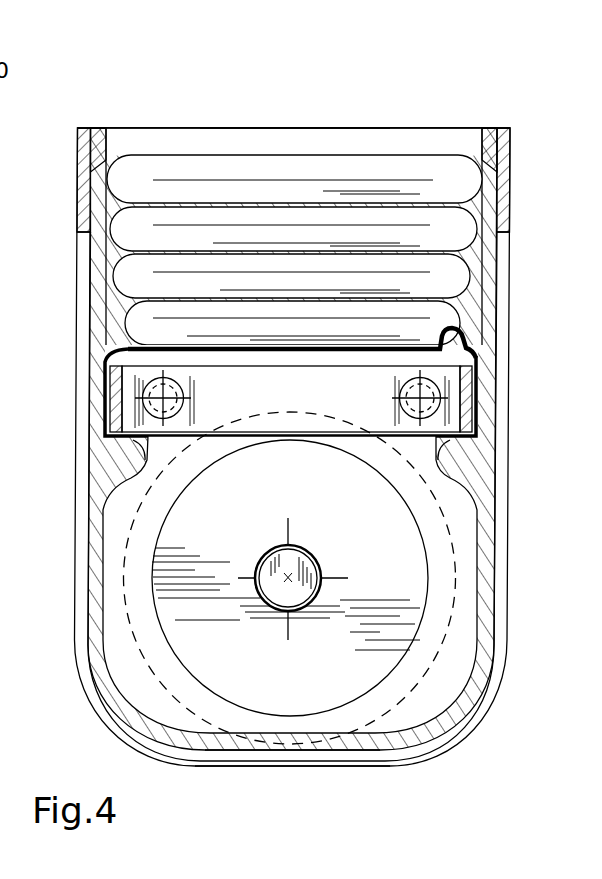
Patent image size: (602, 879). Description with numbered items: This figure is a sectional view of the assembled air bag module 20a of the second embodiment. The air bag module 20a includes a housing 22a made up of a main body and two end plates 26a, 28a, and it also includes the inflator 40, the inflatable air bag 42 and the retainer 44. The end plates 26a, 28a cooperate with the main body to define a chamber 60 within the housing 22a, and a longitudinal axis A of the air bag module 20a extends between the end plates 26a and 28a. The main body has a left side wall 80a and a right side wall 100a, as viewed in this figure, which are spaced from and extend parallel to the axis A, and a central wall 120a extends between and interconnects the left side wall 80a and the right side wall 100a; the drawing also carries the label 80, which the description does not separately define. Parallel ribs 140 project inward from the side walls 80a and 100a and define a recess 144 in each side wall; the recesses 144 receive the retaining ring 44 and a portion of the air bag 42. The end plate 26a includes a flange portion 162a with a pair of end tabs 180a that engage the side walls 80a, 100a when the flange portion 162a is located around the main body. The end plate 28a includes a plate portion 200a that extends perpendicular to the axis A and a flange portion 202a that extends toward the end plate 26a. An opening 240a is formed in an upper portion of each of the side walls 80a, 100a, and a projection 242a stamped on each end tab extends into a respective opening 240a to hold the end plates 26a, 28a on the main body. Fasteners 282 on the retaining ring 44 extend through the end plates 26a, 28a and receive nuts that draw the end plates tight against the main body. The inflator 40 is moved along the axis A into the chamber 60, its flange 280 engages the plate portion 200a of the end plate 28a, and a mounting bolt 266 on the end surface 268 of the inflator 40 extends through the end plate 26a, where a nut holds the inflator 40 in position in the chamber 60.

The air bag module 20a is at (478, 53).
The housing 22a is at (497, 130).
The end plate 26a is at (511, 210).
The end plate 28a is at (458, 722).
The inflator 40 is at (152, 537).
The inflatable air bag 42 is at (257, 170).
The retainer 44 is at (478, 384).
The chamber 60 is at (107, 495).
The cup 80 is at (105, 393).
The left side wall 80a is at (82, 355).
The right side wall 100a is at (488, 256).
The central wall 120a is at (345, 752).
The ribs 140 is at (112, 345).
The recess 144 is at (112, 406).
The flange portion 162a is at (77, 270).
The end tabs 180a is at (78, 136).
The plate portion 200a is at (242, 144).
The flange portion 202a is at (499, 572).
The opening 240a is at (107, 148).
The projection 242a is at (96, 158).
The mounting bolt 266 is at (321, 586).
The end surface 268 is at (349, 499).
The flange 280 is at (438, 663).
The fasteners 282 is at (400, 384).
The longitudinal axis A is at (283, 573).